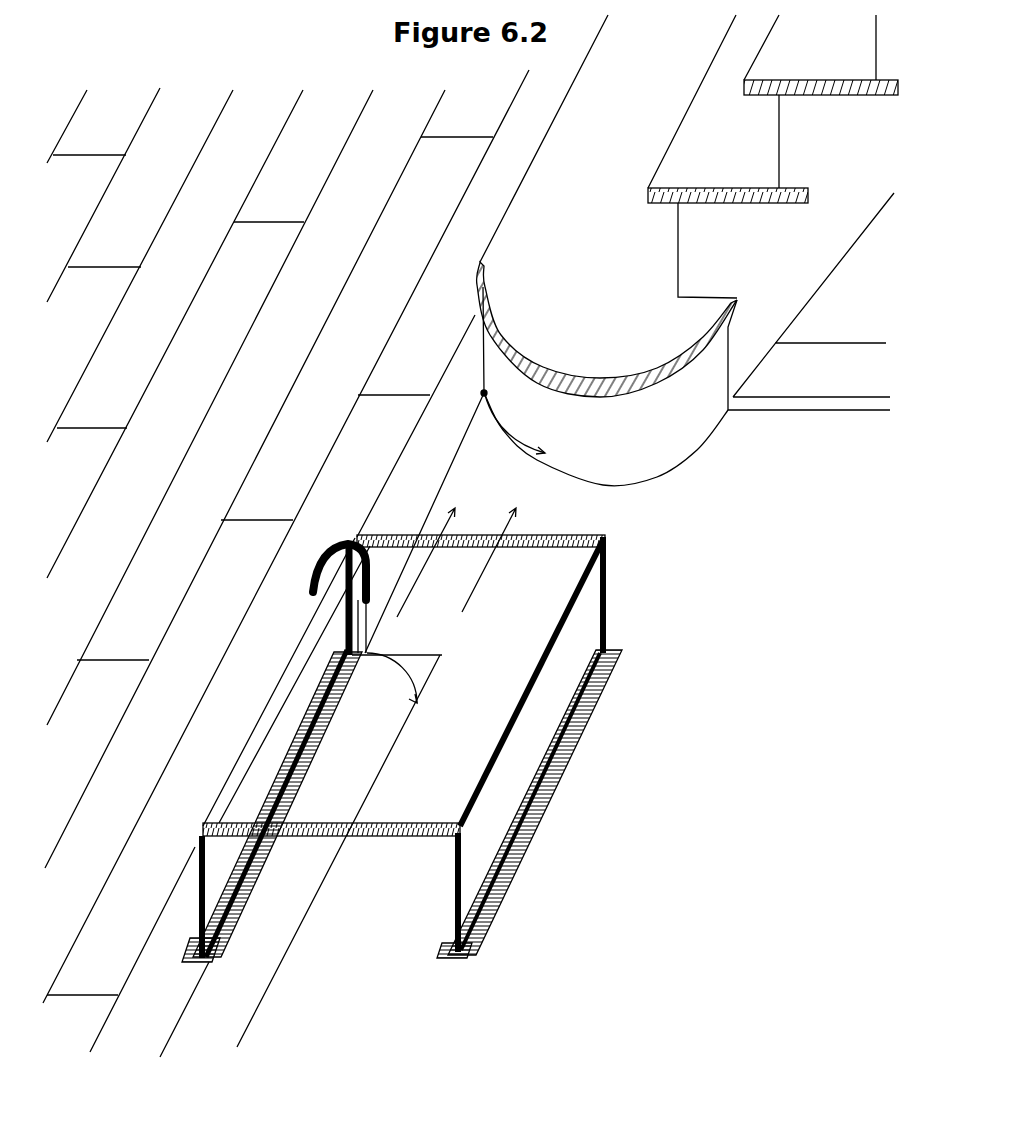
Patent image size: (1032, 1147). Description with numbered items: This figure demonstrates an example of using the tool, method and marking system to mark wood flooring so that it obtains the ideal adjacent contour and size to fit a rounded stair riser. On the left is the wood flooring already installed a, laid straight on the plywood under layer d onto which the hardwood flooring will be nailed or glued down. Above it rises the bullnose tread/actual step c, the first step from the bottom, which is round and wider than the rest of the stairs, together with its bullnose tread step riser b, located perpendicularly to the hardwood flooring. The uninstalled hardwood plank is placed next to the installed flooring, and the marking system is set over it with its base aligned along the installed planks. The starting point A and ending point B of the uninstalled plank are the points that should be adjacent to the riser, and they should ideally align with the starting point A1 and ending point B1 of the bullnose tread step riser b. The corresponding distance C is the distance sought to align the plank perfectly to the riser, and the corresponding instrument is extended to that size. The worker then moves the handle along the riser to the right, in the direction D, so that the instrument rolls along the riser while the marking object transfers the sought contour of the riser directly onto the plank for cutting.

The wood flooring already installed a is at (411, 536).
The bullnose tread step riser b is at (610, 386).
The bullnose tread/actual step c is at (607, 329).
The plywood (under layer) d is at (773, 275).
The starting point of the uninstalled wood plank A is at (373, 604).
The ending point of the uninstalled wood plank B is at (405, 691).
The corresponding distance C is at (456, 562).
The direction of marking object movement D is at (397, 691).
The starting point of the bullnose tread step riser A1 is at (471, 391).
The ending point of the bullnose tread step riser B1 is at (530, 426).